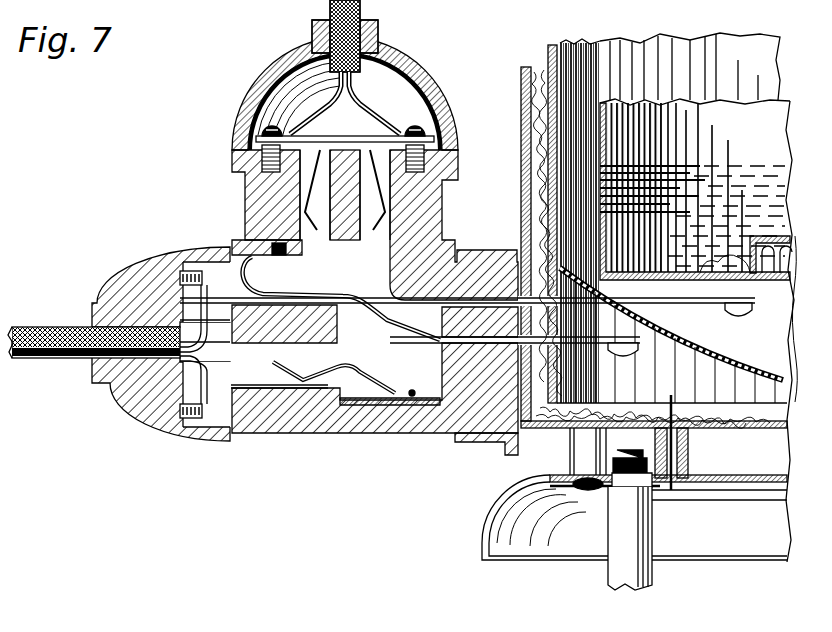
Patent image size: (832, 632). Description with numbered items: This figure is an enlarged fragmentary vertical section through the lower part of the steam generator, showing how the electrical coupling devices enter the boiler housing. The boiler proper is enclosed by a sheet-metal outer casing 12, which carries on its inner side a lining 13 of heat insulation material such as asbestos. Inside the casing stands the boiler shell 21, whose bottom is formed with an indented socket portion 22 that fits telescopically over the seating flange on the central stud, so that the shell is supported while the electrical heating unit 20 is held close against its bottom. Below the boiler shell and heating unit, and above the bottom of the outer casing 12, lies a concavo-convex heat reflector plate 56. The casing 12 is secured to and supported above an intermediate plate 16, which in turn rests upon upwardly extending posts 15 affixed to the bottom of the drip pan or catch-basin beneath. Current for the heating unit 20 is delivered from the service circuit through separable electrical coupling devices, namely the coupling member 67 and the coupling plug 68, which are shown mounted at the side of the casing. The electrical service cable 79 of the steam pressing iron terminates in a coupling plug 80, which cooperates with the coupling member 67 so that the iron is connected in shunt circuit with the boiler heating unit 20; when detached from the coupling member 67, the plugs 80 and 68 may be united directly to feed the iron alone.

The outer casing 12 is at (522, 113).
The lining of heat insulation material 13 is at (540, 142).
The upwardly extending posts 15 is at (653, 532).
The intermediate plate 16 is at (492, 521).
The electrical heating unit 20 is at (698, 297).
The boiler shell 21 is at (586, 180).
The indented socket portion 22 is at (700, 281).
The concavo-convex heat reflector plate 56 is at (722, 365).
The coupling member 67 is at (312, 426).
The coupling plug 68 is at (247, 197).
The electrical service cable 79 is at (40, 358).
The coupling plug 80 is at (177, 432).